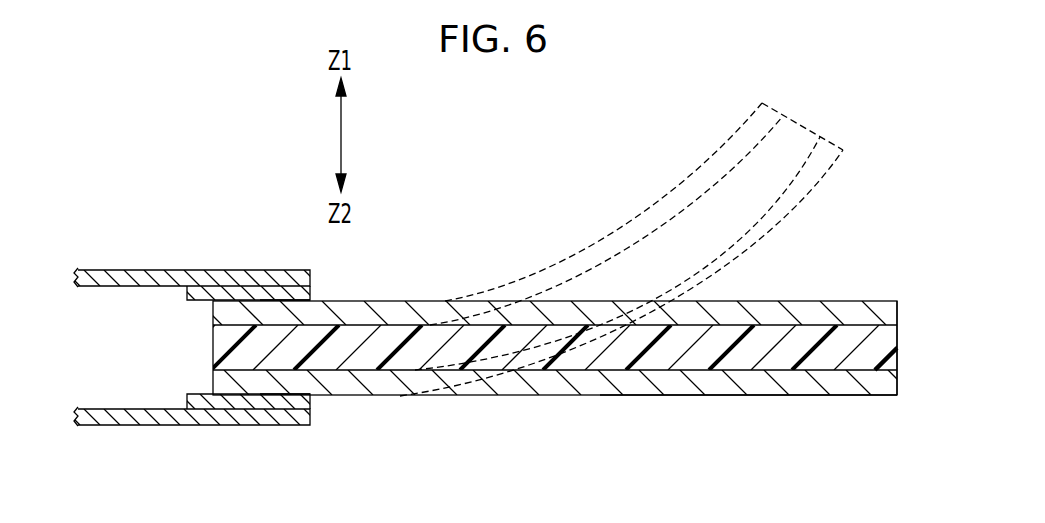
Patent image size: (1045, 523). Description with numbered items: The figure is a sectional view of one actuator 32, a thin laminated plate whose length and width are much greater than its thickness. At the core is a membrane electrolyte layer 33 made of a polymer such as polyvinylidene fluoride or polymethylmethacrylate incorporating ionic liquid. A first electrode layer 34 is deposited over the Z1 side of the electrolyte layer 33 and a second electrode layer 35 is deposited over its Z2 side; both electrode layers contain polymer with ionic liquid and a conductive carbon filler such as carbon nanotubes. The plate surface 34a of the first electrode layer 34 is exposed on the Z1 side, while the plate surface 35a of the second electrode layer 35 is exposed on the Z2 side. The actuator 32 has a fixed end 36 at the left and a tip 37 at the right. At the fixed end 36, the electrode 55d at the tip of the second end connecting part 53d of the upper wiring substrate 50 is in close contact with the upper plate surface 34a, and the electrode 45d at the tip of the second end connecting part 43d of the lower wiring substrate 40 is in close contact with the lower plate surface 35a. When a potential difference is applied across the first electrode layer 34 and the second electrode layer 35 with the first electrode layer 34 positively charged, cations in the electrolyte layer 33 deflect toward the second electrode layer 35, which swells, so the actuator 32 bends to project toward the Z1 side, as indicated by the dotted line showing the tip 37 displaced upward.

The actuator 32 is at (704, 408).
The membrane electrolyte layer 33 is at (848, 335).
The first electrode layer 34 is at (805, 312).
The plate surface of the first electrode layer 34a is at (755, 298).
The second electrode layer 35 is at (810, 382).
The plate surface of the second electrode layer 35a is at (746, 396).
The fixed end 36 is at (247, 372).
The tip 37 is at (859, 372).
The lower wiring substrate 40 is at (142, 425).
The second end connecting part of the lower wiring substrate 43d is at (293, 425).
The electrode of the lower wiring substrate 45d is at (310, 400).
The upper wiring substrate 50 is at (142, 277).
The second end connecting part of the upper wiring substrate 53d is at (253, 270).
The electrode of the upper wiring substrate 55d is at (312, 290).